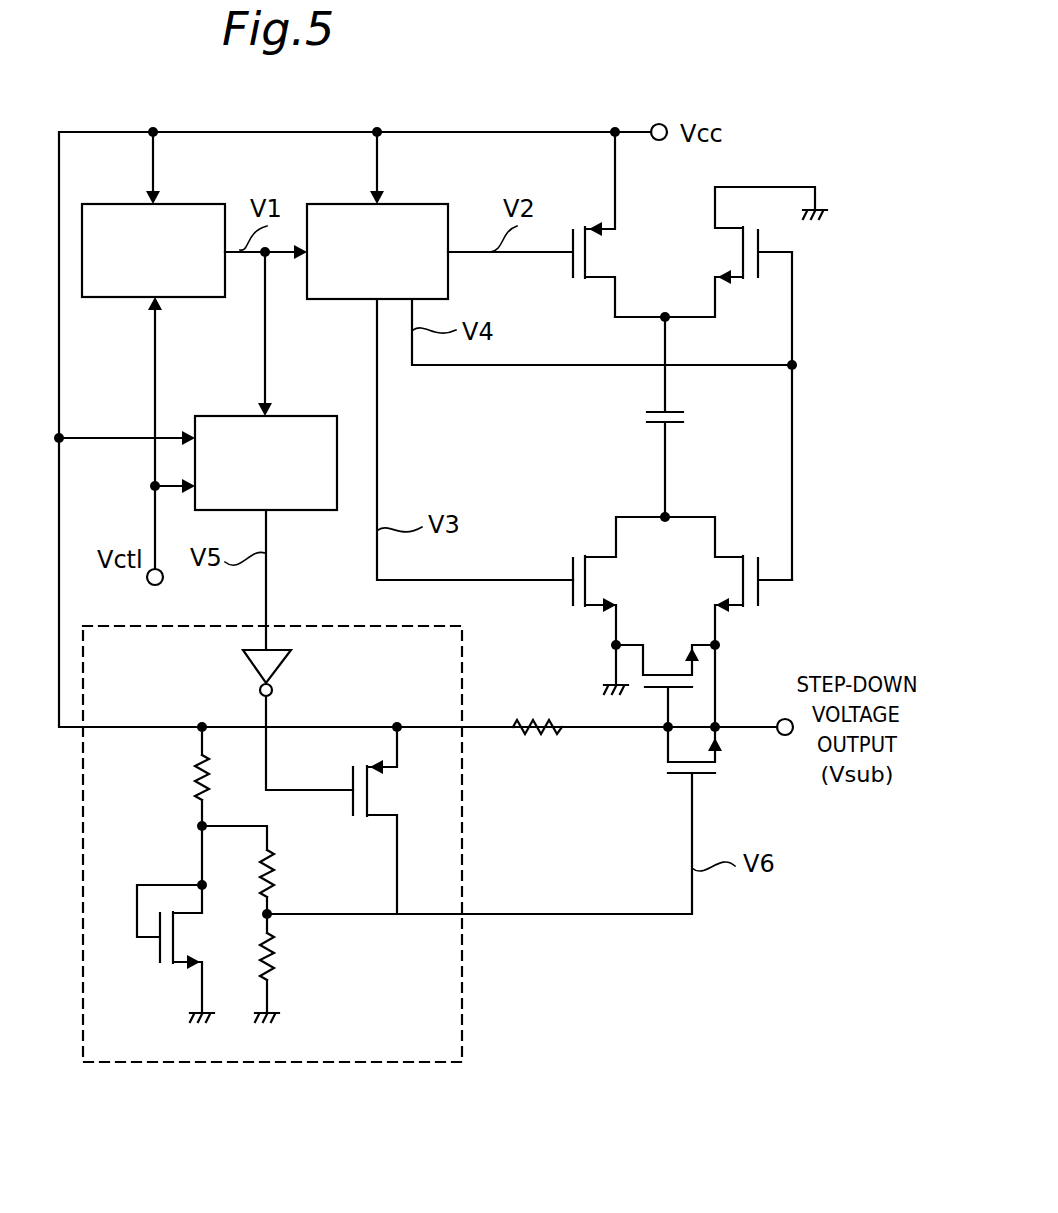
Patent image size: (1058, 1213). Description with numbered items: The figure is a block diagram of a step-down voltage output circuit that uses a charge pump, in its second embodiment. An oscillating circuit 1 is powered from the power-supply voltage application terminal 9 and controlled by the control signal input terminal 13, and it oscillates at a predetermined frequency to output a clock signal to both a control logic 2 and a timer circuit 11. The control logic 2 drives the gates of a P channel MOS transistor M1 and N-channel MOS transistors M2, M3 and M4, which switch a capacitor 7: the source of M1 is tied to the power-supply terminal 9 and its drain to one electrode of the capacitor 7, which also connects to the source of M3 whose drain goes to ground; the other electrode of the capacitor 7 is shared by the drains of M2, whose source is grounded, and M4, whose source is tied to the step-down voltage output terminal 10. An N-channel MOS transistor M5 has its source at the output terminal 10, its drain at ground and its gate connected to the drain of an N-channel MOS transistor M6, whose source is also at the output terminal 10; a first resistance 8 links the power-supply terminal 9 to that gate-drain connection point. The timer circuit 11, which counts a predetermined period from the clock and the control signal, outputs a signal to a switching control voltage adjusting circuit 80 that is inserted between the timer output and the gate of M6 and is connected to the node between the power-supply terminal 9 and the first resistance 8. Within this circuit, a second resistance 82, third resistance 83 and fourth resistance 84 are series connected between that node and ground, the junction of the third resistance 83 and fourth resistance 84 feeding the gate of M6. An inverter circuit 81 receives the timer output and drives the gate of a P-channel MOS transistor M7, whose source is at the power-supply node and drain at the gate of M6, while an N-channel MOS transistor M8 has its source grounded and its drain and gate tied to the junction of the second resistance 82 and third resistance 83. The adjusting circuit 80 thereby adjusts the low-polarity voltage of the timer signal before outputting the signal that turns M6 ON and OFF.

The oscillating circuit 1 is at (197, 204).
The control logic 2 is at (418, 204).
The capacitor 7 is at (658, 425).
The first resistance 8 is at (528, 718).
The power-supply voltage application terminal 9 is at (659, 124).
The step-down voltage output terminal 10 is at (785, 736).
The timer circuit 11 is at (312, 416).
The control signal input terminal 13 is at (148, 582).
The switching control voltage adjusting circuit 80 is at (462, 970).
The inverter circuit 81 is at (282, 672).
The second resistance 82 is at (197, 772).
The third resistance 83 is at (275, 862).
The fourth resistance 84 is at (275, 946).
The P channel MOS transistor M1 is at (586, 258).
The N-channel MOS transistor M2 is at (586, 578).
The N-channel MOS transistor M3 is at (740, 256).
The N-channel MOS transistor M4 is at (743, 572).
The N-channel MOS transistor M5 is at (668, 672).
The N-channel MOS transistor M6 is at (673, 777).
The P-channel MOS transistor M7 is at (372, 798).
The N-channel MOS transistor M8 is at (178, 936).